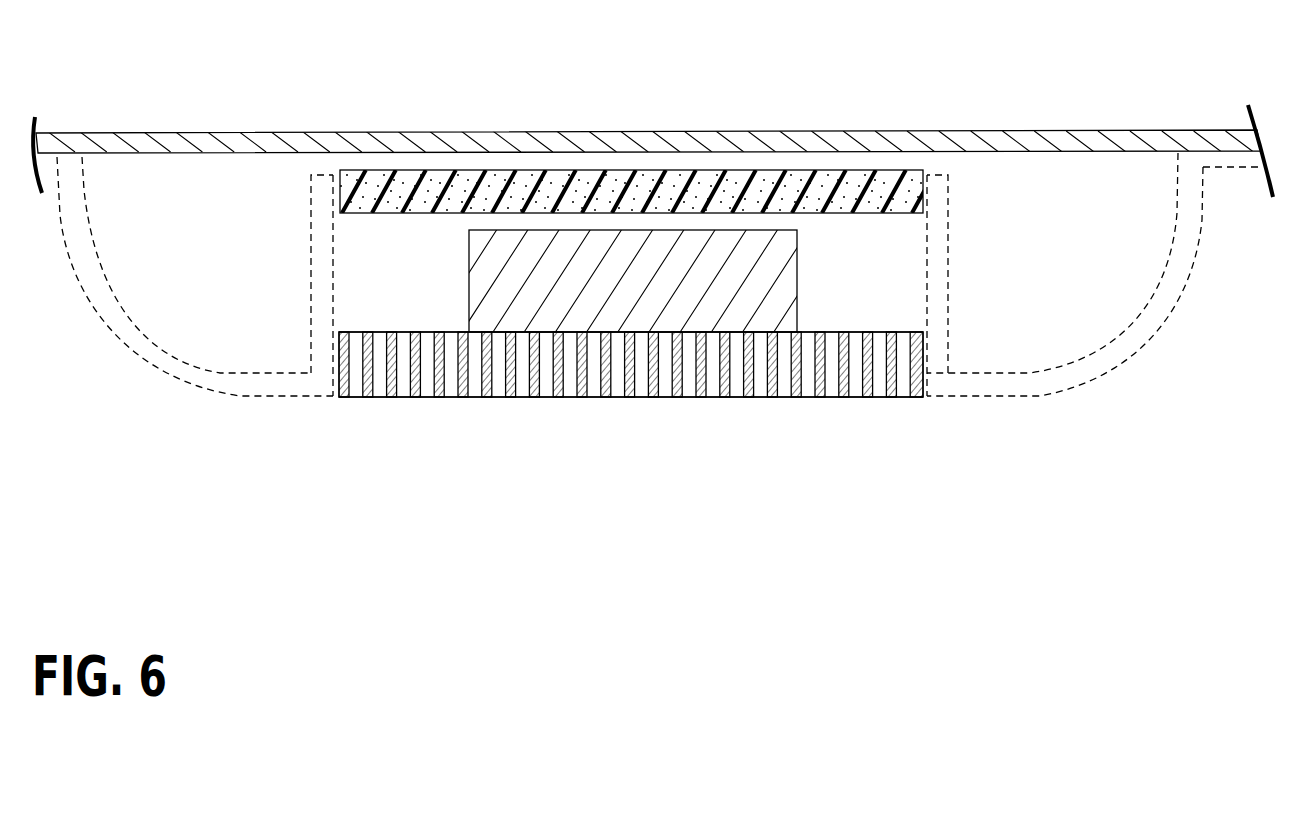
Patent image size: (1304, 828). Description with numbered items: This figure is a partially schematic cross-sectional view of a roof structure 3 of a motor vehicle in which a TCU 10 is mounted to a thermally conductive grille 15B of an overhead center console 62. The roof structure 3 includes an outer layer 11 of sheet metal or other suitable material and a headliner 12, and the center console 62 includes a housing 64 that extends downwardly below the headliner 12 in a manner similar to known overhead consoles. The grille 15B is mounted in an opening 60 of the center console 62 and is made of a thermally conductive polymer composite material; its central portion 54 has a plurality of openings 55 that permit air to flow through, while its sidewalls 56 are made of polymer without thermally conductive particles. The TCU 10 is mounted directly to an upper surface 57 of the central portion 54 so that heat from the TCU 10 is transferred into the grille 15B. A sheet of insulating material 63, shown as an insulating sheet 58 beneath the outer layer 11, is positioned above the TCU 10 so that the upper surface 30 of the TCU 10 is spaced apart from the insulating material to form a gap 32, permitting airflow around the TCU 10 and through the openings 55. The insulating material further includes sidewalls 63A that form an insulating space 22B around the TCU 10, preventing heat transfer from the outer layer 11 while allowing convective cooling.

The roof structure 3 is at (1005, 128).
The TCU 10 is at (746, 304).
The outer layer 11 is at (1067, 133).
The headliner 12 is at (1233, 172).
The grille 15B is at (798, 400).
The insulating space 22B is at (421, 305).
The upper surface 30 is at (747, 232).
The gap 32 is at (648, 223).
The central portion 54 is at (657, 388).
The openings 55 is at (688, 388).
The sidewalls 56 is at (340, 347).
The upper surface 57 is at (853, 330).
The sheet 58 is at (908, 198).
The opening 60 is at (335, 397).
The center console 62 is at (260, 398).
The sheet of insulating material 63 is at (948, 190).
The sidewalls 63A is at (311, 207).
The housing 64 is at (85, 300).